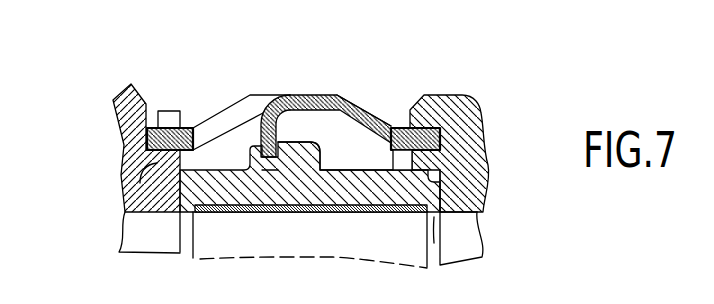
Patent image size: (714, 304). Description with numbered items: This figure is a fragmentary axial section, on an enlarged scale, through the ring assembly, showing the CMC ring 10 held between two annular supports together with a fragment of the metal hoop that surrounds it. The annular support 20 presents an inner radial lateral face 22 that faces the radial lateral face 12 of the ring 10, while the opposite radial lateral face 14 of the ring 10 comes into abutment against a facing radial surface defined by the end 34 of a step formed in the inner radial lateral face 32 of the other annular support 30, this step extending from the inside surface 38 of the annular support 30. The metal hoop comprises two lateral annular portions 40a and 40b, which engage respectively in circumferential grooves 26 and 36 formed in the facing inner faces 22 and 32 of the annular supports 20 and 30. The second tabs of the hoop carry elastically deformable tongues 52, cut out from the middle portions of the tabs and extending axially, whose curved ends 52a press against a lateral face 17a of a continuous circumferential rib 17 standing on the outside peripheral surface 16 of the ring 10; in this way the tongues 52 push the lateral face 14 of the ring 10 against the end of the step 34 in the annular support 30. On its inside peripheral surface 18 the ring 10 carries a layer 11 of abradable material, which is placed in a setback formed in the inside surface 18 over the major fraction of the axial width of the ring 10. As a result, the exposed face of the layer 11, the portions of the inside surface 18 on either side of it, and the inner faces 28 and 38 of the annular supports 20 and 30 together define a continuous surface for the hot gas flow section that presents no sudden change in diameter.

The ring 10 is at (323, 193).
The layer of abradable material 11 is at (401, 213).
The radial lateral face 12 is at (161, 213).
The radial lateral face 14 is at (442, 188).
The outside peripheral surface 16 is at (336, 171).
The circumferential rib 17 is at (297, 142).
The lateral face 17a is at (256, 165).
The inside peripheral surface 18 is at (444, 238).
The annular support 20 is at (123, 120).
The inner radial lateral face 22 is at (181, 112).
The circumferential groove 26 is at (150, 160).
The inner face 28 is at (125, 228).
The annular support 30 is at (440, 118).
The inner radial lateral face 32 is at (392, 113).
The end of step 34 is at (440, 165).
The circumferential groove 36 is at (472, 124).
The inside surface 38 is at (463, 228).
The lateral annular portion 40a is at (160, 127).
The lateral annular portion 40b is at (406, 127).
The elastically deformable tongue 52 is at (364, 108).
The curved end 52a is at (262, 128).